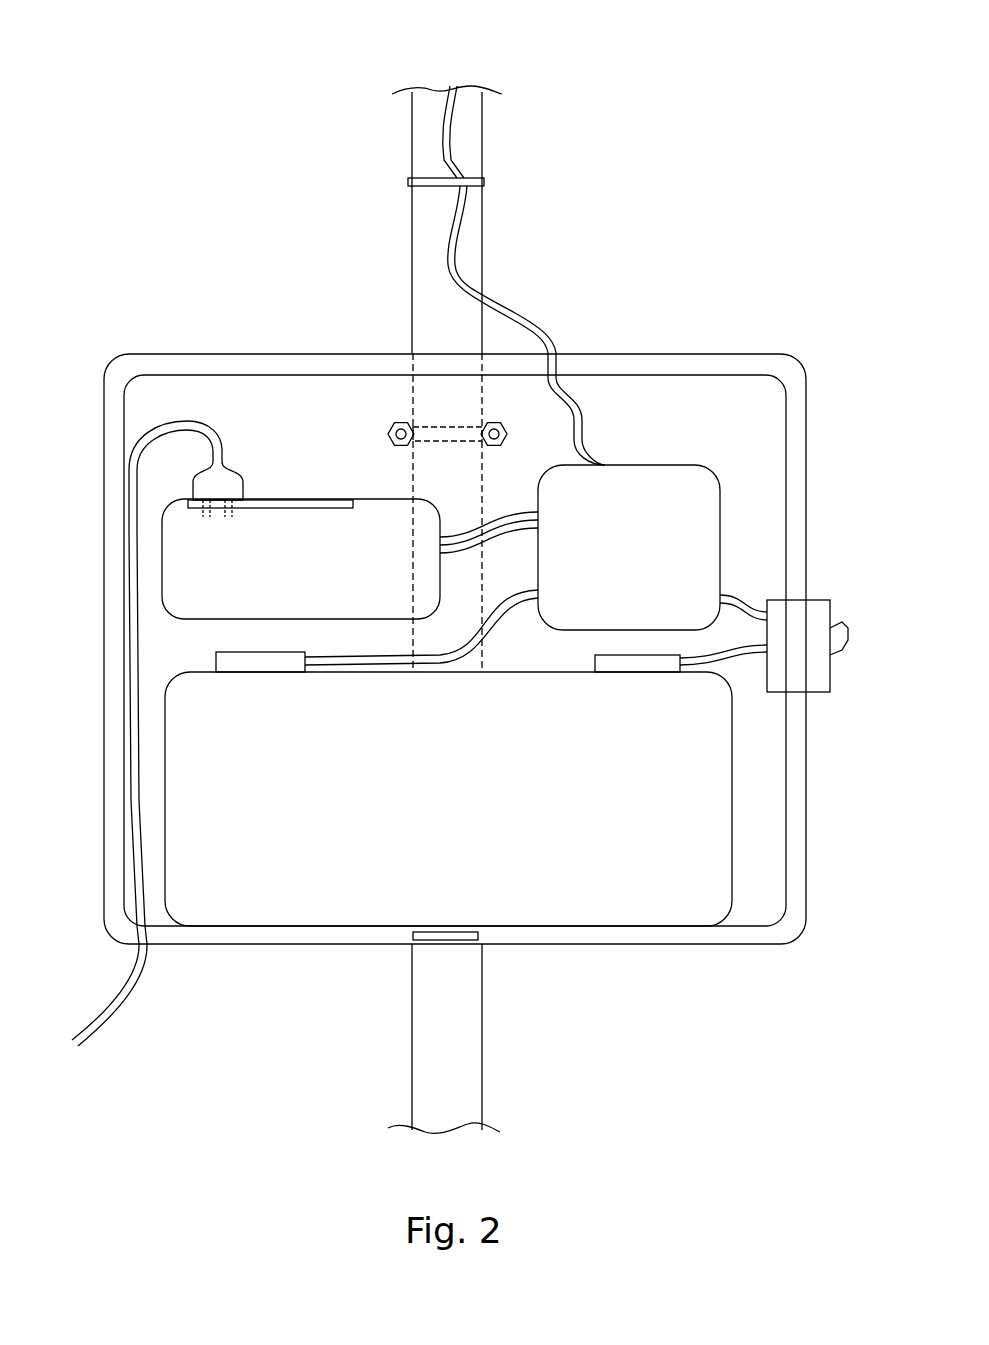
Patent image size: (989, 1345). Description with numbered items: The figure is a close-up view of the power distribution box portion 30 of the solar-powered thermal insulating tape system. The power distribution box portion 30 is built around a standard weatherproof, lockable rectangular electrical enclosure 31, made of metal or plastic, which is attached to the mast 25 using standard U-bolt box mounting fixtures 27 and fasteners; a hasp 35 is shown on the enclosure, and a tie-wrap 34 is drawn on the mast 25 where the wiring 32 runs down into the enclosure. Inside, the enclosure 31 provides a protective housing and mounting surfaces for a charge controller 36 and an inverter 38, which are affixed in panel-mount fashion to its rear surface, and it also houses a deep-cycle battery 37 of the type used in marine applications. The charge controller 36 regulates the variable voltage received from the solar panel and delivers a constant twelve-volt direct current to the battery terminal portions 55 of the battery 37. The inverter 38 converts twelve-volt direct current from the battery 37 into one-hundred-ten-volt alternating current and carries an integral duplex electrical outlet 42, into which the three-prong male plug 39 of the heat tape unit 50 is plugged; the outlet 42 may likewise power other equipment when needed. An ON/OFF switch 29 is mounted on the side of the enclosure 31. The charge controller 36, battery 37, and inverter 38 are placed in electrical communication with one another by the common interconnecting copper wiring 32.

The power distribution box portion 30 is at (90, 100).
The mast 25 is at (412, 127).
The tie-wrap 34 is at (408, 183).
The hasp 35 is at (475, 938).
The wiring 32 is at (538, 520).
The enclosure 31 is at (796, 408).
The box mounting fixture 27 is at (490, 432).
The duplex electrical outlet 42 is at (278, 497).
The inverter 38 is at (190, 563).
The male plug 39 is at (205, 480).
The charge controller 36 is at (675, 568).
The ON/OFF switch 29 is at (840, 632).
The battery 37 is at (690, 765).
The battery terminal portions 55 is at (620, 660).
The heat tape unit 50 is at (133, 708).